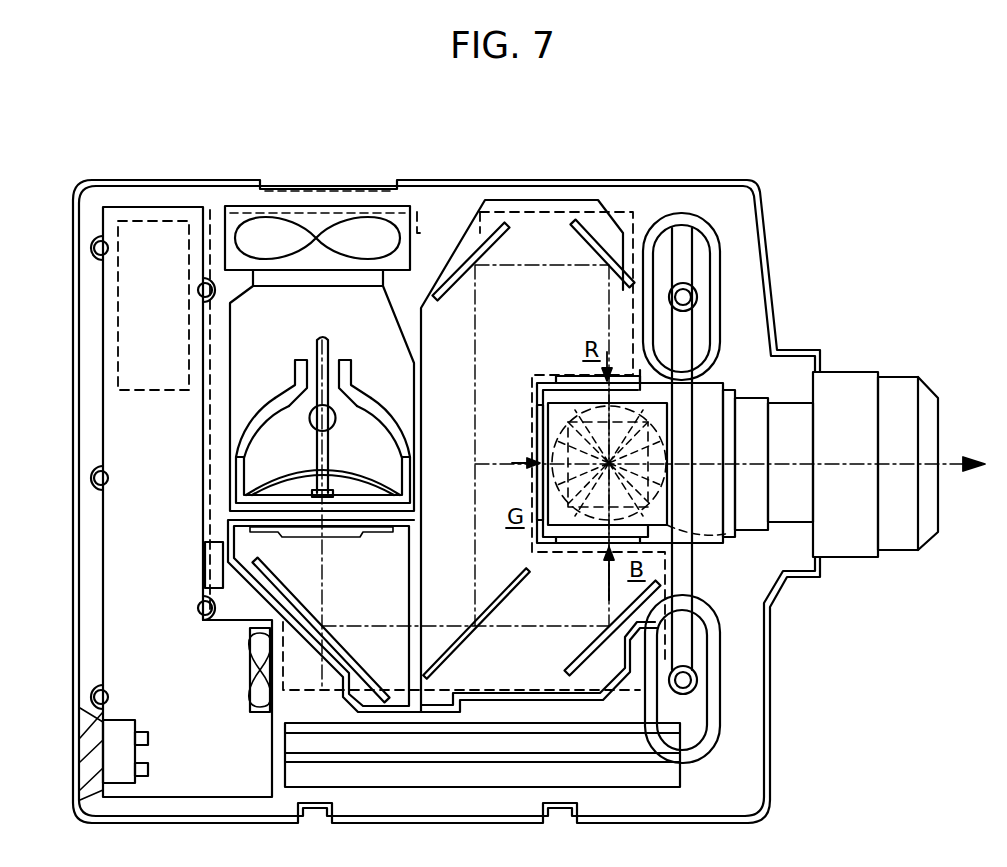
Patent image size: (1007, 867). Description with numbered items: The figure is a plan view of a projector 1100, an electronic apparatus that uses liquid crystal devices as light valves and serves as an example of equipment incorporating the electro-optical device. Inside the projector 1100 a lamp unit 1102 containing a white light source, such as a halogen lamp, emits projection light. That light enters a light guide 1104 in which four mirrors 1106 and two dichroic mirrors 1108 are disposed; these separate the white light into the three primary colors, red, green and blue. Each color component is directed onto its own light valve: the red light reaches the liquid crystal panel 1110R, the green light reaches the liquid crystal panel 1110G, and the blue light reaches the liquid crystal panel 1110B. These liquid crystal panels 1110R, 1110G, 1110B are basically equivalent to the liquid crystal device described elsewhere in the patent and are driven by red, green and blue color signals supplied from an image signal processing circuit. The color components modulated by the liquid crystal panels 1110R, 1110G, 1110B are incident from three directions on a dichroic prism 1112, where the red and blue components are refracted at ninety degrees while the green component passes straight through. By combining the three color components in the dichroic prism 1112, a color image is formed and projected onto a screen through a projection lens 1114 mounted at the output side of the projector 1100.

The projector 1100 is at (773, 187).
The lamp unit 1102 is at (365, 320).
The light guide 1104 is at (484, 215).
The mirrors 1106 is at (585, 240).
The dichroic mirrors 1108 is at (504, 593).
The liquid crystal panel 1110R is at (594, 380).
The liquid crystal panel 1110G is at (545, 440).
The liquid crystal panel 1110B is at (571, 538).
The dichroic prism 1112 is at (724, 545).
The projection lens 1114 is at (907, 383).